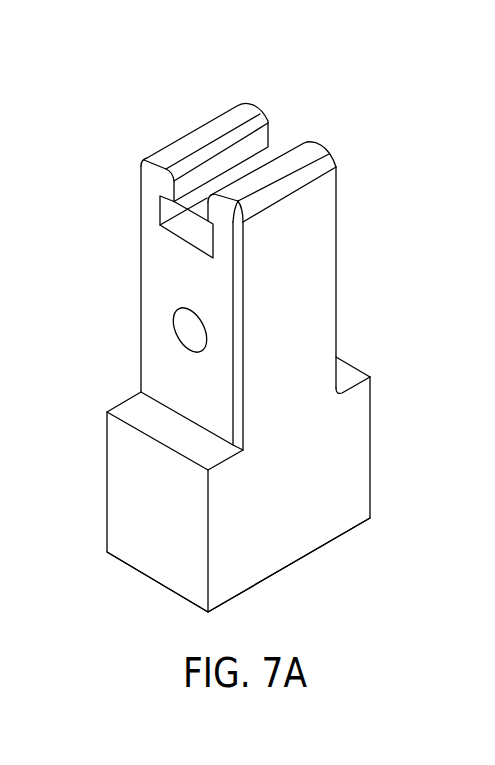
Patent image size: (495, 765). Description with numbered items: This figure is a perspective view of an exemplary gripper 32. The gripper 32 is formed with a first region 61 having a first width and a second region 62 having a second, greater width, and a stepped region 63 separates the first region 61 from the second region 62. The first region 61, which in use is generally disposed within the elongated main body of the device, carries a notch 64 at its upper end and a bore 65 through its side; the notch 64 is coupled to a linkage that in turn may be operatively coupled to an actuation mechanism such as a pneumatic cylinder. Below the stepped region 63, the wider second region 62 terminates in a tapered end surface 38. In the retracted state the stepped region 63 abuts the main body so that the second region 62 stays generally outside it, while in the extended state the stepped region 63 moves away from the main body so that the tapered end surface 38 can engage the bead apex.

The gripper 32 is at (243, 345).
The tapered end surface 38 is at (150, 578).
The first region 61 is at (300, 293).
The second region 62 is at (372, 442).
The stepped region 63 is at (163, 431).
The notch 64 is at (233, 165).
The bore 65 is at (187, 323).